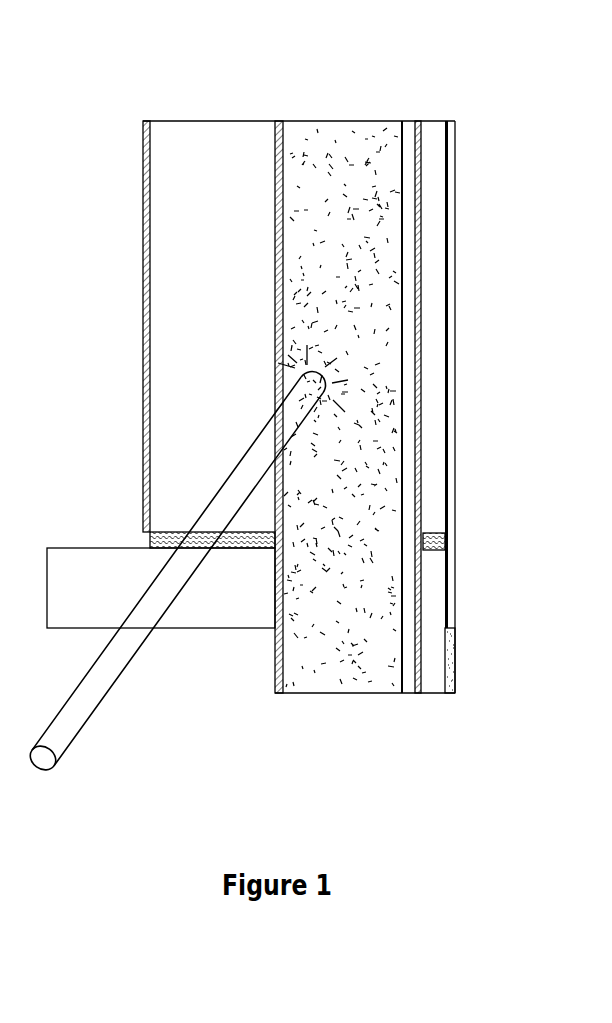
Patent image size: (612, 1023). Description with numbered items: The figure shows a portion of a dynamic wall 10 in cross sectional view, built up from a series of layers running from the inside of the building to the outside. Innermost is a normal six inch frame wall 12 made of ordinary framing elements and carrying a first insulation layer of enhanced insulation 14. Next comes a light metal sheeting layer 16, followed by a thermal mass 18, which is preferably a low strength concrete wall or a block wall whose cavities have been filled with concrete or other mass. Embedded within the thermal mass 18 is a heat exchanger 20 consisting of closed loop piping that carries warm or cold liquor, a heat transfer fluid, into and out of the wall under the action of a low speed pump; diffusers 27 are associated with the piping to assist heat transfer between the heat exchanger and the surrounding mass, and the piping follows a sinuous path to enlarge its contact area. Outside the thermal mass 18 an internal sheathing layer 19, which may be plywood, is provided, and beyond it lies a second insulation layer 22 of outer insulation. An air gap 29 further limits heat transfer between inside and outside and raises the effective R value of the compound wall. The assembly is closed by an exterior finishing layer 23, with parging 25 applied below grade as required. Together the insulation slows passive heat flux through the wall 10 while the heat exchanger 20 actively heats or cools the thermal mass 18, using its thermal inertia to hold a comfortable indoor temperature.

The dynamic wall 10 is at (348, 83).
The frame wall 12 is at (209, 83).
The first insulation layer 14 is at (198, 187).
The light metal sheeting layer 16 is at (283, 215).
The thermal mass 18 is at (370, 262).
The internal sheathing layer 19 is at (423, 285).
The heat exchanger 20 is at (98, 685).
The second insulation layer 22 is at (435, 323).
The exterior finishing layer 23 is at (455, 388).
The parging 25 is at (455, 667).
The diffuser 27 is at (328, 398).
The air gap 29 is at (405, 511).